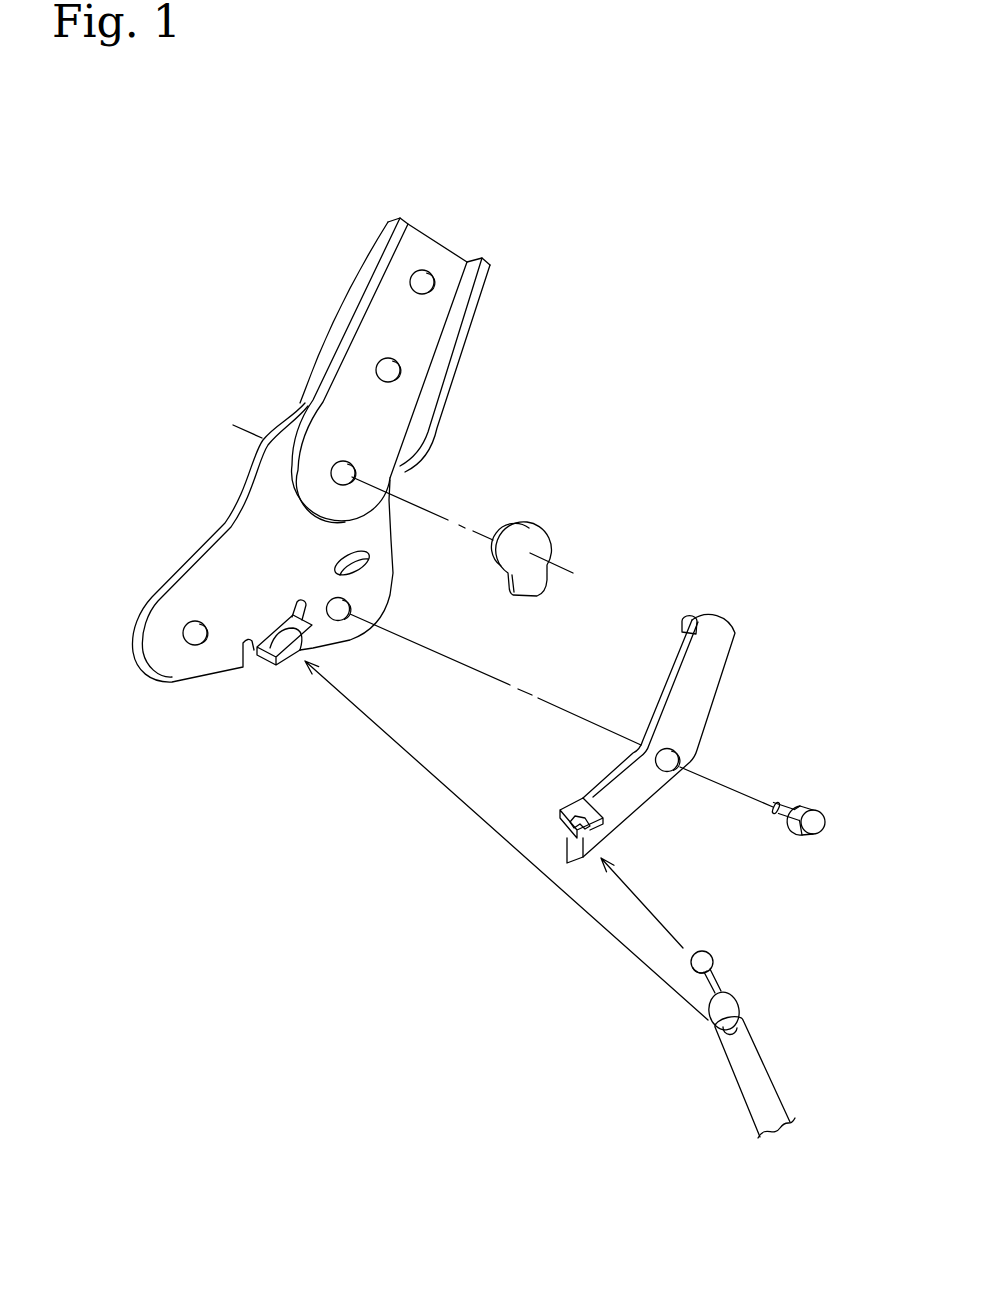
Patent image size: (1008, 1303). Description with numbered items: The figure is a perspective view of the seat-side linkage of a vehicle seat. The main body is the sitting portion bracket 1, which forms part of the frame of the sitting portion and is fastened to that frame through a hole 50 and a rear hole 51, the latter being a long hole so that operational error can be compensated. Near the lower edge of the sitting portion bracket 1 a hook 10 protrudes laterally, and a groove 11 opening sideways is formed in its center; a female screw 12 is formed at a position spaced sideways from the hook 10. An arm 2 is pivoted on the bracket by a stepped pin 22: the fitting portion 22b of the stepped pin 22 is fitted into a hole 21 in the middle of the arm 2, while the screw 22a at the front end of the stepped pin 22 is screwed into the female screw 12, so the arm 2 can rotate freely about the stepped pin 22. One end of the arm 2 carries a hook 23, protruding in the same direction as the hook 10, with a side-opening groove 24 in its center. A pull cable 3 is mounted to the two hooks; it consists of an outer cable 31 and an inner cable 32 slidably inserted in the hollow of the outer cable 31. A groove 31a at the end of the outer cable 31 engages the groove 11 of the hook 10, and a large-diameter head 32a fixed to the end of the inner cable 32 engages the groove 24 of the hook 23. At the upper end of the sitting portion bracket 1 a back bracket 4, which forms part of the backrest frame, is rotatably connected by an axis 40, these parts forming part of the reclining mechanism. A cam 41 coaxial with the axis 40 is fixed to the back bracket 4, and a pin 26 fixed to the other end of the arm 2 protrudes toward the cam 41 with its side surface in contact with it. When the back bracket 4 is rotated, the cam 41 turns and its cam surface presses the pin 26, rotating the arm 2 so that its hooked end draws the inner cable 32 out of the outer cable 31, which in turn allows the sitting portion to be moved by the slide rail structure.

The sitting portion bracket 1 is at (286, 572).
The arm 2 is at (656, 757).
The pull cable 3 is at (731, 1013).
The back bracket 4 is at (391, 358).
The hook 10 is at (277, 658).
The groove 11 is at (295, 651).
The female screw 12 is at (348, 603).
The hole 21 is at (672, 768).
The stepped pin 22 is at (823, 810).
The screw 22a is at (776, 802).
The fitting portion 22b is at (790, 834).
The hook 23 is at (558, 812).
The groove 24 is at (582, 838).
The pin 26 is at (691, 613).
The outer cable 31 is at (763, 1063).
The groove 31a is at (716, 1030).
The inner cable 32 is at (705, 988).
The head 32a is at (700, 950).
The axis 40 is at (340, 465).
The cam 41 is at (527, 521).
The hole 50 is at (192, 626).
The hole 51 is at (342, 560).